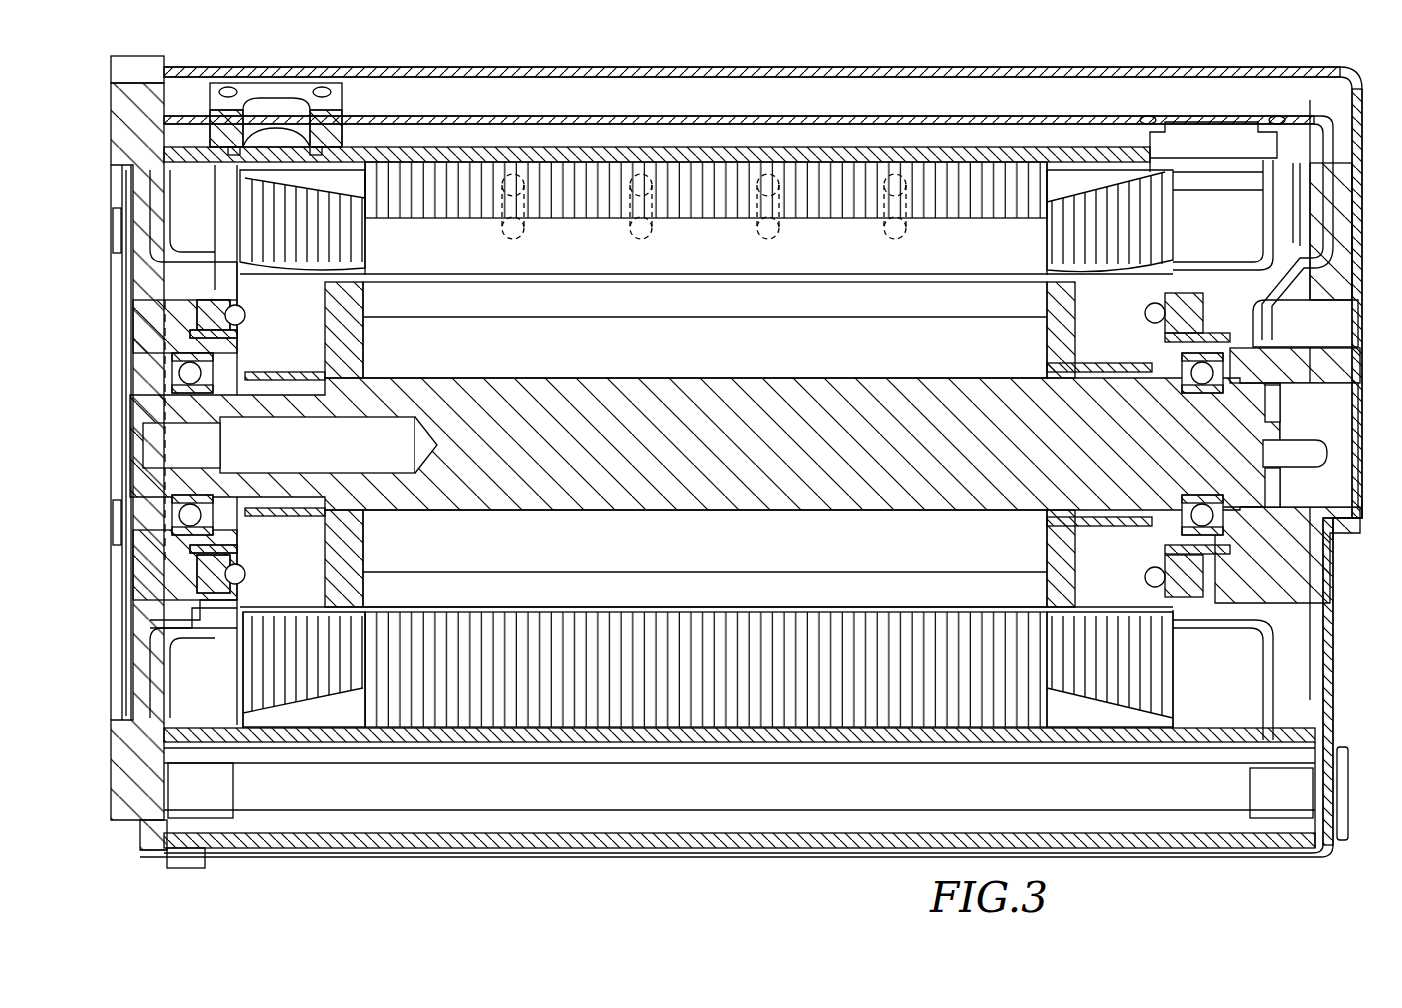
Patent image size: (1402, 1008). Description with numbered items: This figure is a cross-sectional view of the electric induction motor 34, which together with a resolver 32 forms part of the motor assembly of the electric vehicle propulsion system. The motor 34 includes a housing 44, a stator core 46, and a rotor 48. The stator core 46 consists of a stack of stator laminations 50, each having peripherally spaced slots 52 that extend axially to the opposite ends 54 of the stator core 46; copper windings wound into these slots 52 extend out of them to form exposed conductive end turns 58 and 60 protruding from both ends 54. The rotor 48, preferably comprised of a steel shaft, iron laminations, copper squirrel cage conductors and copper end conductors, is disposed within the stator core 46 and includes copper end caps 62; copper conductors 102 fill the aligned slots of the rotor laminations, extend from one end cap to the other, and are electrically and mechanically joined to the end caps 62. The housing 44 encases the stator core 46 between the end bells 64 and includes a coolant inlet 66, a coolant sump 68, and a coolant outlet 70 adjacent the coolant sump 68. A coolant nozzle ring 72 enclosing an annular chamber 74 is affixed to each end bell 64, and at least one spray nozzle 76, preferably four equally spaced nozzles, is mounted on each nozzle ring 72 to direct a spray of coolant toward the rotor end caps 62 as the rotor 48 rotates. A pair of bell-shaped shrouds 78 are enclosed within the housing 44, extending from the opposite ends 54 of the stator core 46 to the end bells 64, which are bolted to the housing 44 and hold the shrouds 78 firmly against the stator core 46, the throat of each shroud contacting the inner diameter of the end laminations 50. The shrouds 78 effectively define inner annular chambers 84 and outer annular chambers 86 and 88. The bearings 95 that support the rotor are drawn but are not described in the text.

The resolver 32 is at (1355, 497).
The motor 34 is at (430, 896).
The housing 44 is at (485, 60).
The stator core 46 is at (833, 680).
The rotor 48 is at (420, 335).
The stator laminations 50 is at (843, 175).
The slots 52 is at (578, 250).
The ends of the stator core 54 is at (350, 718).
The end turn 58 is at (260, 228).
The end turn 60 is at (1128, 677).
The end caps 62 is at (325, 540).
The end bells 64 is at (130, 115).
The coolant inlet 66 is at (280, 105).
The coolant sump 68 is at (515, 793).
The coolant outlet 70 is at (1350, 810).
The nozzle ring 72 is at (1300, 305).
The annular chamber 74 is at (1185, 333).
The spray nozzle 76 is at (1165, 310).
The shrouds 78 is at (225, 650).
The inner annular chambers 84 is at (1090, 320).
The outer annular chamber 86 is at (325, 718).
The outer annular chamber 88 is at (1240, 213).
The bearing 95 is at (195, 372).
The copper conductors 102 is at (812, 290).